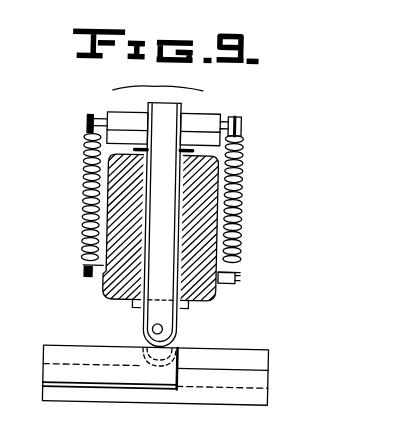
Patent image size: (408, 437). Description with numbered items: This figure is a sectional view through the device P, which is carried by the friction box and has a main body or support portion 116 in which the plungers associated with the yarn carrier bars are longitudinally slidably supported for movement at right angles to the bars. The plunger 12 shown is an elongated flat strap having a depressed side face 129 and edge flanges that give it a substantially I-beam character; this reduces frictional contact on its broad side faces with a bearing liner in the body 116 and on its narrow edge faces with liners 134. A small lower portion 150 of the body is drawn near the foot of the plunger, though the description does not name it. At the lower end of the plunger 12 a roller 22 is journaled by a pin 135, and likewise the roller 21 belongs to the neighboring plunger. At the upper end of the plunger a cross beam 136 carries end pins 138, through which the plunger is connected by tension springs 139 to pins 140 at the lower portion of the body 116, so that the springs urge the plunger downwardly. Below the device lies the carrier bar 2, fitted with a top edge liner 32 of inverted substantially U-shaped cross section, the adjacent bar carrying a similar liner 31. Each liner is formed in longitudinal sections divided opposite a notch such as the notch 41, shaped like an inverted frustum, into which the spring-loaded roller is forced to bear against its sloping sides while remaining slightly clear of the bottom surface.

The device P is at (158, 76).
The plunger 12 is at (147, 103).
The depressed side face 129 is at (169, 130).
The liners 134 is at (143, 280).
The roller 22 is at (180, 330).
The pins 135 is at (154, 328).
The cross beams 136 is at (84, 124).
The end pins 138 is at (238, 122).
The tension springs 139 is at (82, 170).
The pins 140 is at (85, 270).
The main body or support portion 116 is at (106, 286).
The bottom foot 150 is at (213, 295).
The yarn carrier bar 2 is at (60, 397).
The top edge liner 32 is at (48, 362).
The top edge liner 31 is at (260, 355).
The roller 21 is at (140, 348).
The notch 41 is at (142, 368).